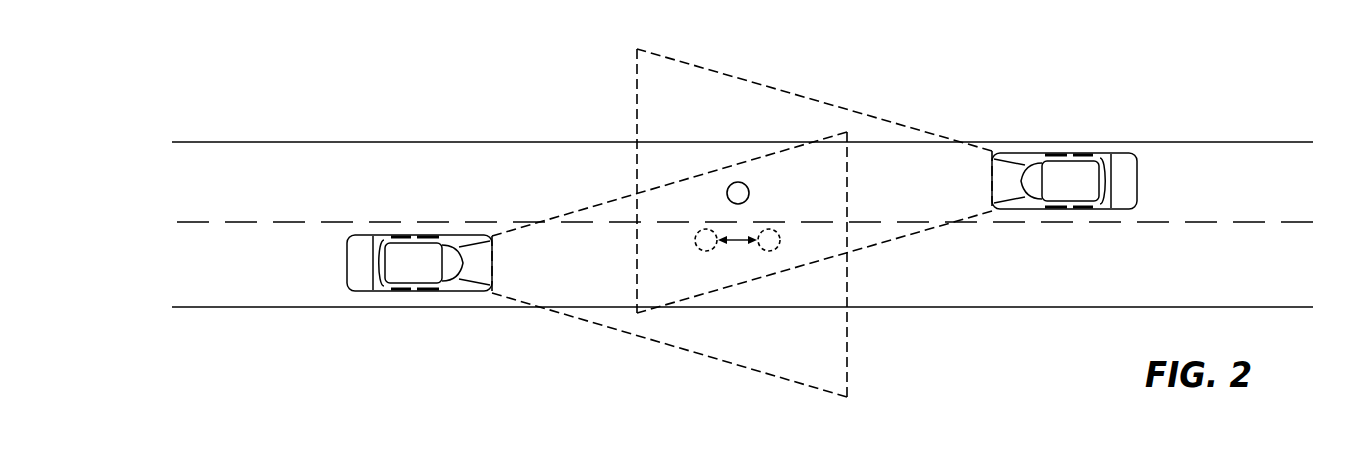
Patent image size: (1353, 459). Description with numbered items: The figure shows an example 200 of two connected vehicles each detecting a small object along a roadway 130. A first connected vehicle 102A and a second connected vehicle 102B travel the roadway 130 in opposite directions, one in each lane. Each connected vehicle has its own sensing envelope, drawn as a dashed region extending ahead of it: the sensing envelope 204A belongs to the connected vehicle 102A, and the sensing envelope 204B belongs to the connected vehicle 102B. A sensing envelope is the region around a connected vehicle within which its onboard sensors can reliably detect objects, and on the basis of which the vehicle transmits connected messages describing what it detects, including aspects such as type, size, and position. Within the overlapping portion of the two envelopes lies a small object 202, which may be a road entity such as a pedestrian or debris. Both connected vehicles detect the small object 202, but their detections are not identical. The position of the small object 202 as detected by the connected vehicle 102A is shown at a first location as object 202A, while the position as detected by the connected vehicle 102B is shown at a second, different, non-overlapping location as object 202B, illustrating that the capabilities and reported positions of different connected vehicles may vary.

The example 200 is at (272, 44).
The roadway 130 is at (1208, 142).
The connected vehicle 102A is at (436, 274).
The connected vehicle 102B is at (1094, 192).
The sensing envelope 204A is at (573, 273).
The sensing envelope 204B is at (943, 193).
The small object 202 is at (748, 187).
The object 202A is at (698, 249).
The object 202B is at (781, 241).